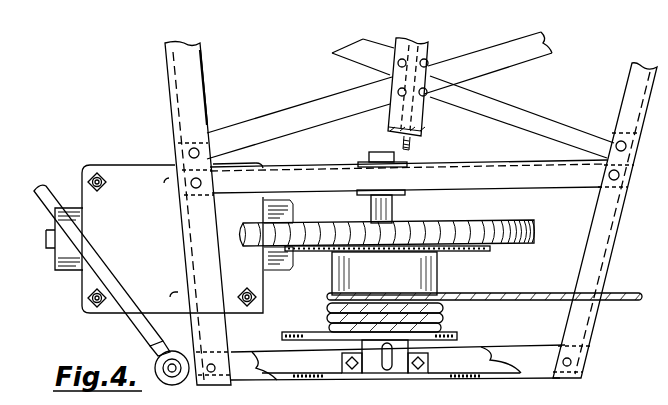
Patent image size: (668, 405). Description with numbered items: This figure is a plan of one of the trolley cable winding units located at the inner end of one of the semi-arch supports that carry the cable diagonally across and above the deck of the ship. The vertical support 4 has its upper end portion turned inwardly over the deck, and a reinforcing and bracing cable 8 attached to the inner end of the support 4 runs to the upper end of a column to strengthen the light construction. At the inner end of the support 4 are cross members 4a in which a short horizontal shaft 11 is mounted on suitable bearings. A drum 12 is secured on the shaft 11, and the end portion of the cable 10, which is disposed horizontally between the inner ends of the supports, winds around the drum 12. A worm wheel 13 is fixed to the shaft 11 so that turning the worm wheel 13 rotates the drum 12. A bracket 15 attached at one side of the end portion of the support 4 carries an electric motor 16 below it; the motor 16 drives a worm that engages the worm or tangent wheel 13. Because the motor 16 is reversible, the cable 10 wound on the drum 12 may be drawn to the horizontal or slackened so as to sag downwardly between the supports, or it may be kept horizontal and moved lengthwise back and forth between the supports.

The vertical support 4 is at (195, 110).
The cross member 4a is at (466, 175).
The reinforcing and bracing cable 8 is at (97, 272).
The cable 10 is at (521, 293).
The horizontal shaft 11 is at (399, 211).
The drum 12 is at (441, 279).
The worm wheel 13 is at (534, 228).
The bracket 15 is at (133, 278).
The electric motor 16 is at (63, 257).